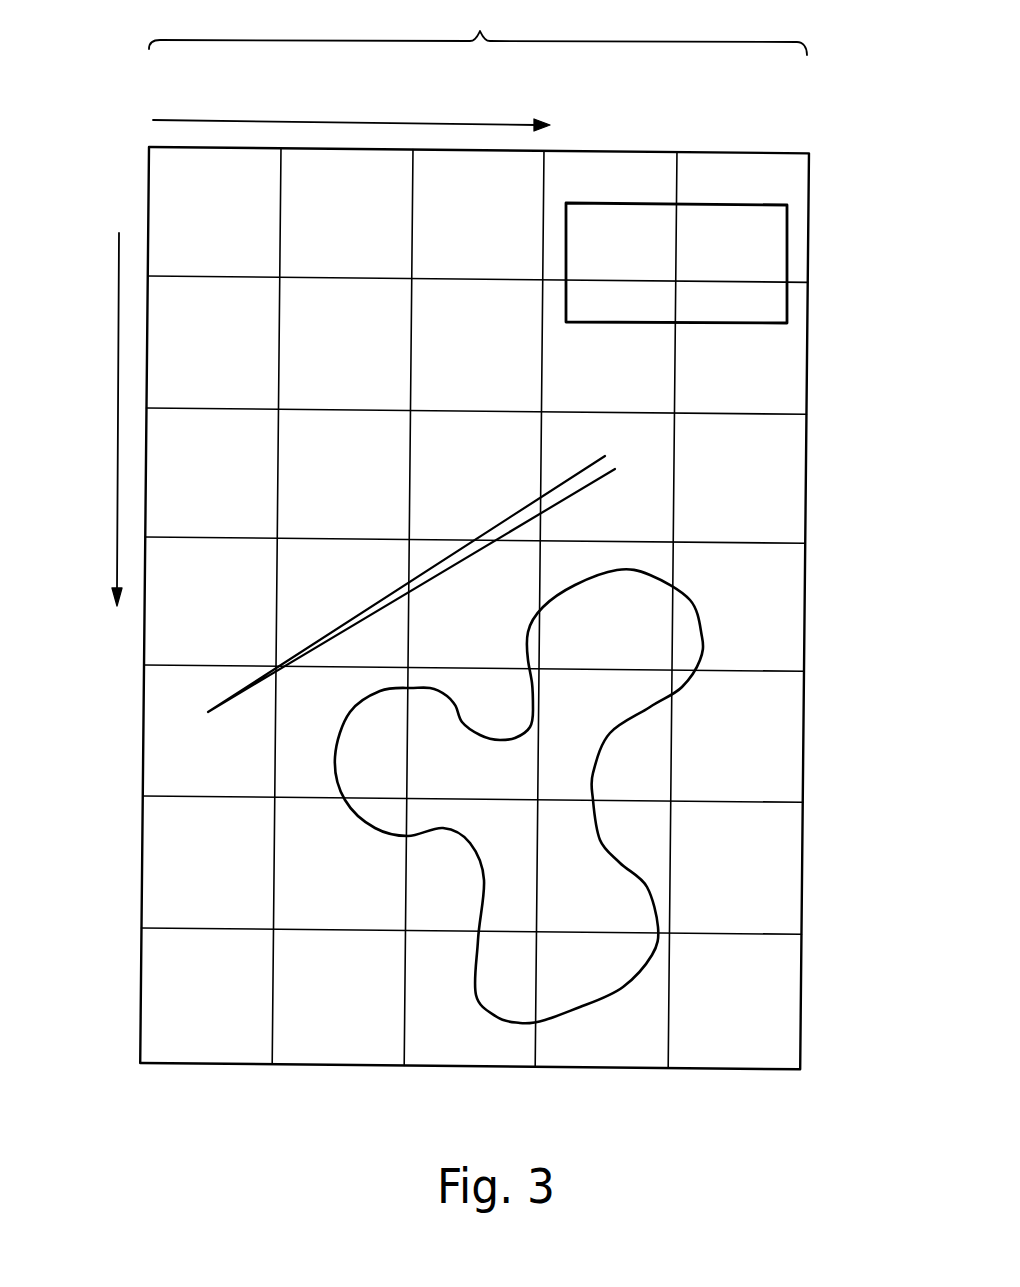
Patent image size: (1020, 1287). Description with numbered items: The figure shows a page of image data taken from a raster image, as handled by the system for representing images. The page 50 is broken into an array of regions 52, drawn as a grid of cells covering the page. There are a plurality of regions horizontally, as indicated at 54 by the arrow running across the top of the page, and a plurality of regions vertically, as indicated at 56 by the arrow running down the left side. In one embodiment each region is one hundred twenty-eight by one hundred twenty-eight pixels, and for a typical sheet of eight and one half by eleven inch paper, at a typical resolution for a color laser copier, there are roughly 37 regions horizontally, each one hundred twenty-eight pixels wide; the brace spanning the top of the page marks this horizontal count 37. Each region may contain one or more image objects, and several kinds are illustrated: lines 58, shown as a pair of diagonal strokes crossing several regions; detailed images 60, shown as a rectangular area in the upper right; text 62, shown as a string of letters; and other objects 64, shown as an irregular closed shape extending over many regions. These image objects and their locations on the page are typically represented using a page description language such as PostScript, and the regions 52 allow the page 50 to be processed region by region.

The regions horizontally 37 is at (478, 27).
The page 50 is at (822, 124).
The regions 52 is at (793, 189).
The regions horizontally 54 is at (365, 122).
The regions vertically 56 is at (121, 397).
The lines 58 is at (587, 490).
The detailed images 60 is at (625, 323).
The text 62 is at (372, 419).
The other objects 64 is at (615, 855).